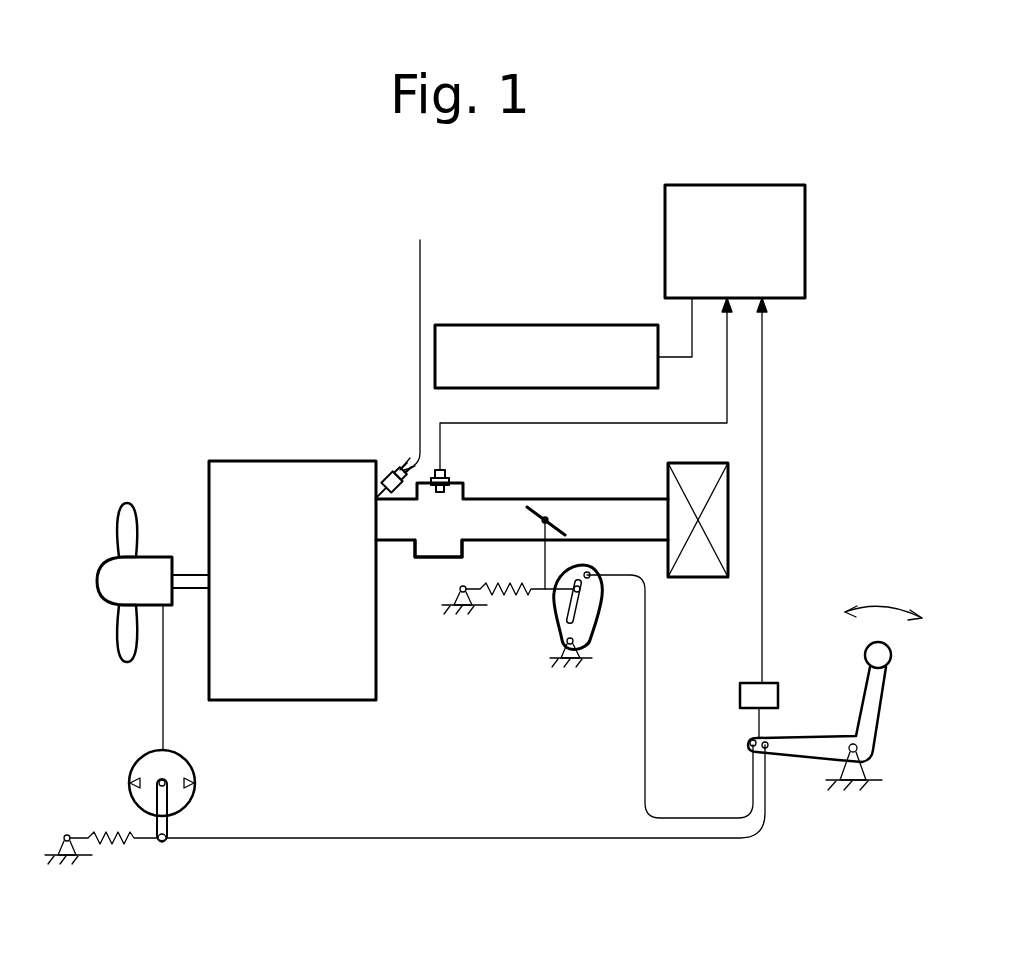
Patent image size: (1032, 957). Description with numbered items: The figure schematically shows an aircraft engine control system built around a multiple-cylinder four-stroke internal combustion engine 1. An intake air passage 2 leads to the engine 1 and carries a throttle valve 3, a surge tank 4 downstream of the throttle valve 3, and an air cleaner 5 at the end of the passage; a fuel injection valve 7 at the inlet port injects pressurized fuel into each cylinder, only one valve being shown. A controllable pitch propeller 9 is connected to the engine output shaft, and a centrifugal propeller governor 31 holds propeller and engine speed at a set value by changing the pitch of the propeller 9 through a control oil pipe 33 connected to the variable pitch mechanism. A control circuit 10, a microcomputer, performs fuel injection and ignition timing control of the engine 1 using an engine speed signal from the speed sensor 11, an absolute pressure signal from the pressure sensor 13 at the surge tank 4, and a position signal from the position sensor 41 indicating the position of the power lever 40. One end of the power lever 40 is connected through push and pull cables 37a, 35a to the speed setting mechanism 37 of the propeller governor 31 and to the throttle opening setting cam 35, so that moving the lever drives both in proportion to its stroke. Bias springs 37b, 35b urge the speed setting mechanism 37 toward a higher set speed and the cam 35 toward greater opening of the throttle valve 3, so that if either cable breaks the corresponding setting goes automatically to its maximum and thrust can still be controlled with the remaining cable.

The internal combustion engine 1 is at (283, 586).
The intake air passage 2 is at (492, 510).
The throttle valve 3 is at (572, 517).
The surge tank 4 is at (425, 558).
The air cleaner 5 is at (707, 580).
The fuel injection valve 7 is at (392, 467).
The controllable pitch propeller 9 is at (140, 518).
The control circuit 10 is at (807, 233).
The speed sensor 11 is at (605, 325).
The pressure sensor 13 is at (448, 478).
The propeller governor 31 is at (193, 770).
The control oil pipe 33 is at (163, 707).
The throttle opening setting cam 35 is at (552, 635).
The push and pull cable 35a is at (645, 703).
The bias spring 35b is at (508, 595).
The speed setting mechanism 37 is at (168, 827).
The push and pull cable 37a is at (430, 840).
The bias spring 37b is at (118, 845).
The power lever 40 is at (890, 715).
The position sensor 41 is at (767, 683).